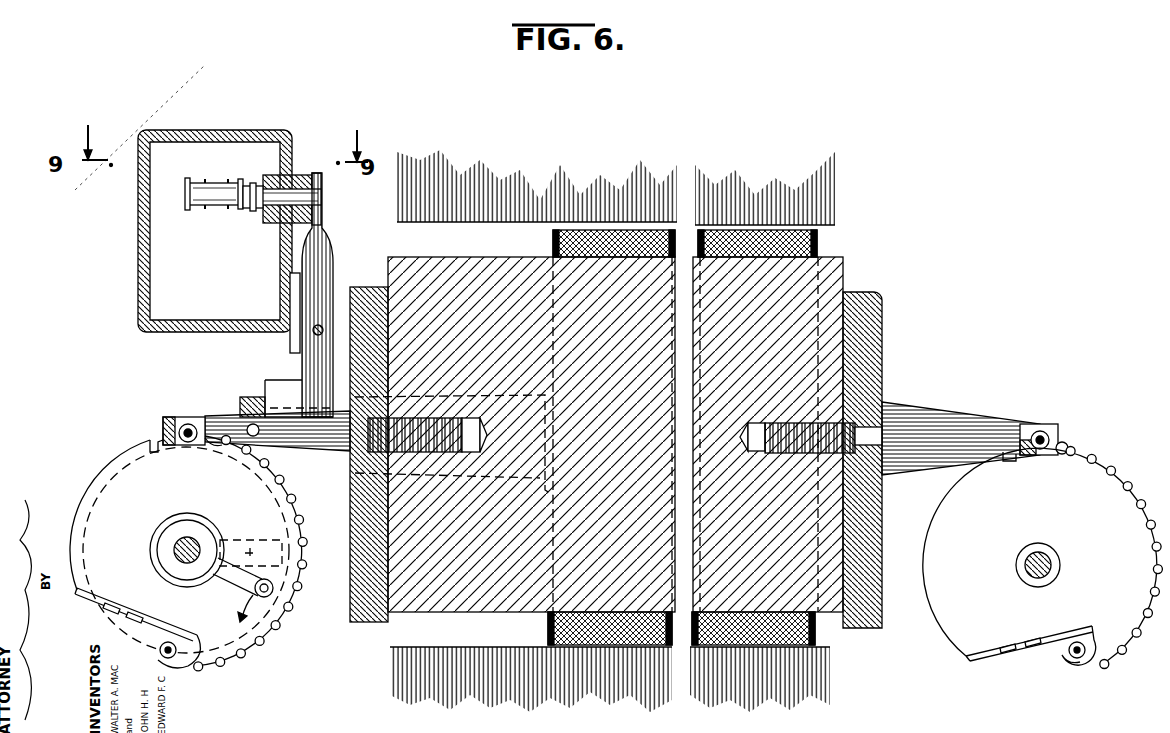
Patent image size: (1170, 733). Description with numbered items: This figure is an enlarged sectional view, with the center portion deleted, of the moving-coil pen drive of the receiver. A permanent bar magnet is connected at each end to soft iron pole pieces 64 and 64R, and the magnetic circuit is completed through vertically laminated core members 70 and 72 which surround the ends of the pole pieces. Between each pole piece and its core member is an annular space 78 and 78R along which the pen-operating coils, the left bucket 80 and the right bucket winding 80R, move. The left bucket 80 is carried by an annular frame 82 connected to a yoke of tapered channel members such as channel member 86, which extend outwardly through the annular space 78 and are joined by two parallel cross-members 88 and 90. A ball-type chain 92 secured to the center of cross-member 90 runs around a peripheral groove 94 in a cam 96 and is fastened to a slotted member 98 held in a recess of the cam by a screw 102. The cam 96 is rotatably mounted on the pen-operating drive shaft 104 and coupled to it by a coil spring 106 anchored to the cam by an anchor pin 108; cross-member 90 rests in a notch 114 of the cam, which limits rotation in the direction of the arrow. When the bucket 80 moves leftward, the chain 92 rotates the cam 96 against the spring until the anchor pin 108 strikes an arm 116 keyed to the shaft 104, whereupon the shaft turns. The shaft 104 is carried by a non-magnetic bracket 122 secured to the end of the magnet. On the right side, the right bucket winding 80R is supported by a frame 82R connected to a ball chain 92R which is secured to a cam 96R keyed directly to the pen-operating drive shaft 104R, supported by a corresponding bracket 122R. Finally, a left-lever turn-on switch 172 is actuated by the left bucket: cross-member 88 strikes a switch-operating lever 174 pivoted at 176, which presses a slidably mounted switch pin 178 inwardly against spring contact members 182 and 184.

The pole piece 64 is at (412, 274).
The pole piece 64R is at (842, 274).
The laminated core member 70 is at (398, 160).
The laminated core member 72 is at (830, 160).
The annular space 78 is at (405, 236).
The annular space 78R is at (832, 244).
The left bucket 80 is at (606, 230).
The right bucket winding 80R is at (750, 232).
The annular frame 82 is at (556, 282).
The frame 82R is at (812, 290).
The tapered channel member 86 is at (333, 455).
The cross-member 88 is at (246, 396).
The cross-member 90 is at (165, 425).
The ball-type chain 92 is at (203, 428).
The ball chain 92R is at (1062, 438).
The peripheral groove 94 is at (186, 550).
The cam 96 is at (84, 500).
The cam 96R is at (925, 540).
The member 98 is at (160, 637).
The screw 102 is at (128, 600).
The pen-operating drive shaft 104 is at (178, 545).
The pen-operating drive shaft 104R is at (1040, 556).
The coil spring 106 is at (207, 518).
The anchor pin 108 is at (255, 594).
The notch 114 is at (152, 442).
The arm 116 is at (248, 541).
The bracket 122 is at (366, 574).
The bracket 122R is at (846, 576).
The left-lever turn-on switch 172 is at (182, 110).
The switch-operating lever 174 is at (304, 372).
The pivot 176 is at (312, 326).
The switch pin 178 is at (298, 183).
The spring contact member 182 is at (186, 208).
The spring contact member 184 is at (236, 210).